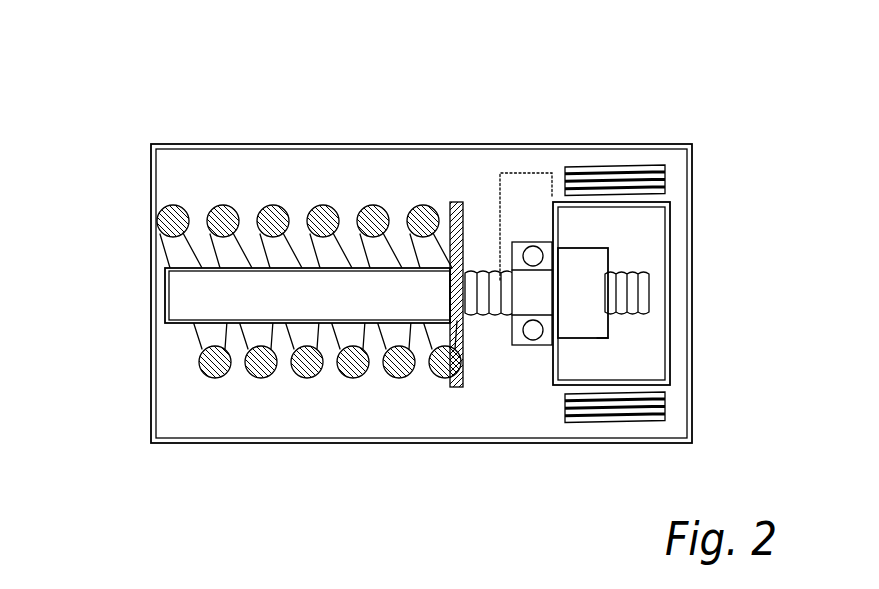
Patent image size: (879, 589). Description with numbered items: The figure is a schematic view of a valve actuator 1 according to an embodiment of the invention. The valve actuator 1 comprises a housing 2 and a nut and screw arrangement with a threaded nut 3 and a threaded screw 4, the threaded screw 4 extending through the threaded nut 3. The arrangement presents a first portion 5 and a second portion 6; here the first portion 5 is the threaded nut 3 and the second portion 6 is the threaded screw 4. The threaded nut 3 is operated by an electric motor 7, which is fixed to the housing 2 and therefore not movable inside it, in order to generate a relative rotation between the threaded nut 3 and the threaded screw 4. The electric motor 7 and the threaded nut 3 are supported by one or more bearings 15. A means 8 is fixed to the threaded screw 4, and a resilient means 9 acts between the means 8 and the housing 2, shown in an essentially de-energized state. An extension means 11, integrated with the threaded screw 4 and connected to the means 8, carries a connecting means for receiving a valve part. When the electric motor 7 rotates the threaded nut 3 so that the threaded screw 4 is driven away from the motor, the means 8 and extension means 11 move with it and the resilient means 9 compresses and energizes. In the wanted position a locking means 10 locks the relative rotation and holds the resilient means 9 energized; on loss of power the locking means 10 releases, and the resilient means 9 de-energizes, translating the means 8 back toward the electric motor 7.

The valve actuator 1 is at (698, 90).
The housing 2 is at (195, 143).
The threaded nut 3 is at (597, 328).
The threaded screw 4 is at (477, 287).
The first portion 5 is at (592, 290).
The second portion 6 is at (493, 317).
The electric motor 7 is at (676, 235).
The means 8 is at (457, 387).
The resilient means 9 is at (325, 204).
The locking means 10 is at (535, 173).
The extension means 11 is at (180, 292).
The bearings 15 is at (533, 340).